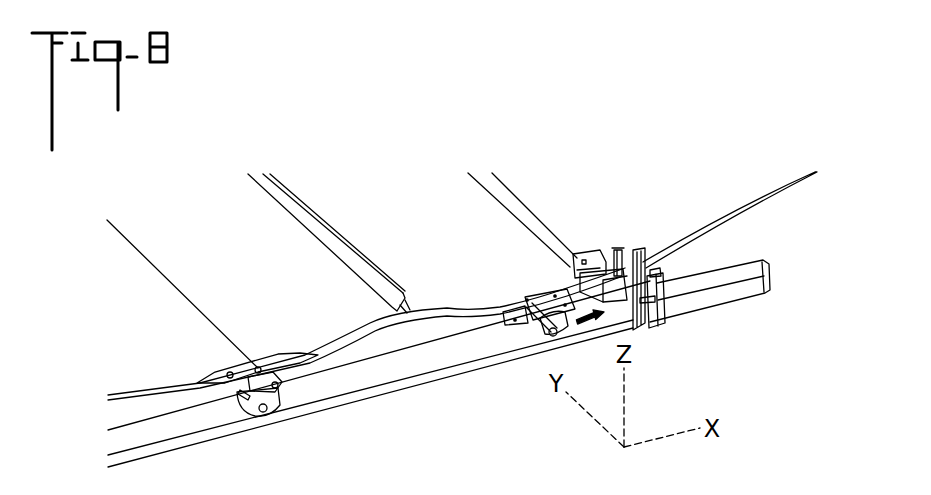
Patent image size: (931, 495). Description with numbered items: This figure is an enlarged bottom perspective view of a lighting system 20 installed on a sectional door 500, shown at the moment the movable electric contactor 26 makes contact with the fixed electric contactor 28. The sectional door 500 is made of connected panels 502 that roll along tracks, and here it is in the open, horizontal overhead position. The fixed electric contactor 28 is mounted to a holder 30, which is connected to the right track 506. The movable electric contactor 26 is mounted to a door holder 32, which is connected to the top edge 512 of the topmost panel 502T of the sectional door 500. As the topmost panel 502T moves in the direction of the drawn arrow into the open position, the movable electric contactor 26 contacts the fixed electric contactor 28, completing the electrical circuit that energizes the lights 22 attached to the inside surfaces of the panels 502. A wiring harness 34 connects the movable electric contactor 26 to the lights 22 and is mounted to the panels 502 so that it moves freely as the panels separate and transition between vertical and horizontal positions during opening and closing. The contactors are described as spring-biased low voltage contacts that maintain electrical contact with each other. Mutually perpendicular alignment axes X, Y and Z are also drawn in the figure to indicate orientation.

The lighting system 20 is at (661, 155).
The light 22 is at (356, 263).
The movable electric contactor 26 is at (613, 250).
The fixed electric contactor 28 is at (630, 250).
The holder 30 is at (658, 245).
The door holder 32 is at (575, 262).
The wiring harness 34 is at (467, 310).
The sectional door 500 is at (216, 203).
The panel 502 is at (158, 348).
The topmost panel 502T is at (495, 230).
The right track 506 is at (705, 286).
The top edge 512 is at (543, 233).